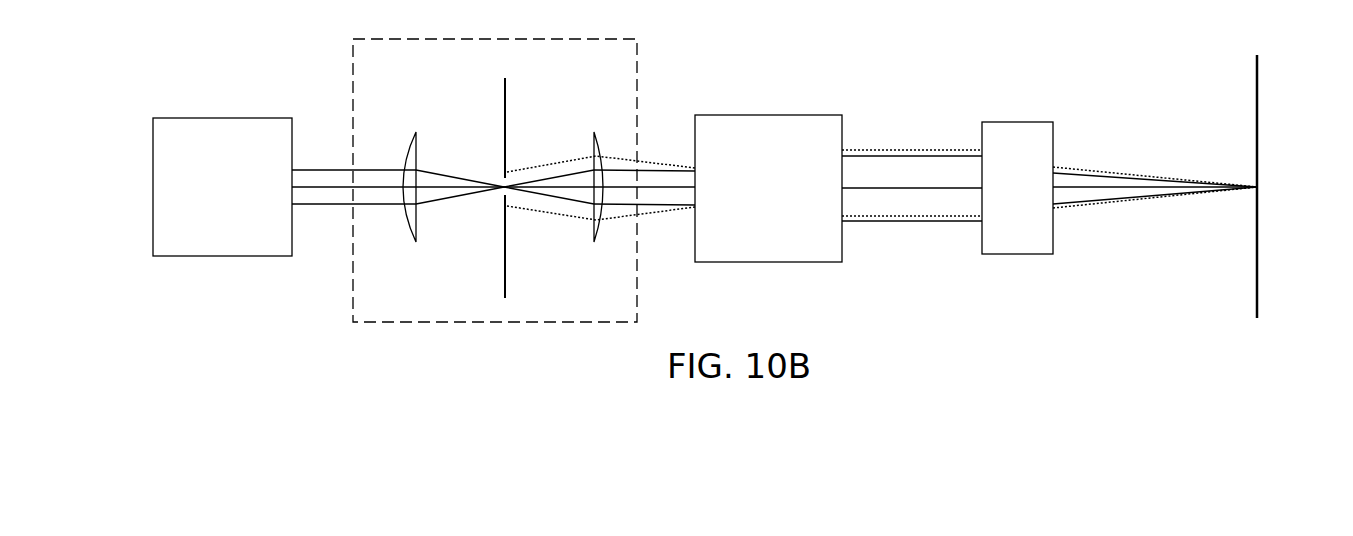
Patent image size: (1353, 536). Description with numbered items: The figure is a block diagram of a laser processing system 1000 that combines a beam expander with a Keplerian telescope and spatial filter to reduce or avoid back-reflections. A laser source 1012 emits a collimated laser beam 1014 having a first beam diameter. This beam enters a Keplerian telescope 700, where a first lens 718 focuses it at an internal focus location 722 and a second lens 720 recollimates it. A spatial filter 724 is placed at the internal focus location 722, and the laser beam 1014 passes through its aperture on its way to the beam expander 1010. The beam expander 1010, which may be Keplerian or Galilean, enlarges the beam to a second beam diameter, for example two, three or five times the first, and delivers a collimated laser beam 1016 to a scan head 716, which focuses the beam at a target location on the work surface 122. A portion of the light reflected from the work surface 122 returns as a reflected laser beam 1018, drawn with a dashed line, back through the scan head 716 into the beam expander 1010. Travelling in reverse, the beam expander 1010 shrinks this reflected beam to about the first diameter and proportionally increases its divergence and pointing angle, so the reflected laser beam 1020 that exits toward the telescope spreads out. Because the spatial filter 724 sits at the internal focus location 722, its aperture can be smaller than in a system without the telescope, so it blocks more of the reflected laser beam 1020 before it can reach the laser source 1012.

The laser processing system 1000 is at (284, 71).
The laser source 1012 is at (240, 257).
The collimated laser beam 1014 is at (330, 207).
The Keplerian telescope 700 is at (427, 38).
The first lens 718 is at (412, 235).
The spatial filter 724 is at (503, 95).
The internal focus location 722 is at (495, 195).
The second lens 720 is at (593, 237).
The reflected laser beam exiting the beam expander 1020 is at (637, 160).
The beam expander 1010 is at (815, 115).
The reflected laser beam 1018 is at (867, 150).
The collimated laser beam having the second beam diameter 1016 is at (858, 221).
The scan head 716 is at (990, 254).
The work surface 122 is at (1256, 78).